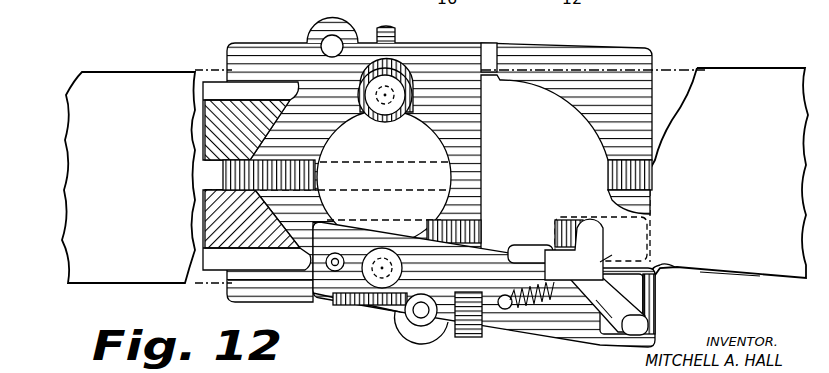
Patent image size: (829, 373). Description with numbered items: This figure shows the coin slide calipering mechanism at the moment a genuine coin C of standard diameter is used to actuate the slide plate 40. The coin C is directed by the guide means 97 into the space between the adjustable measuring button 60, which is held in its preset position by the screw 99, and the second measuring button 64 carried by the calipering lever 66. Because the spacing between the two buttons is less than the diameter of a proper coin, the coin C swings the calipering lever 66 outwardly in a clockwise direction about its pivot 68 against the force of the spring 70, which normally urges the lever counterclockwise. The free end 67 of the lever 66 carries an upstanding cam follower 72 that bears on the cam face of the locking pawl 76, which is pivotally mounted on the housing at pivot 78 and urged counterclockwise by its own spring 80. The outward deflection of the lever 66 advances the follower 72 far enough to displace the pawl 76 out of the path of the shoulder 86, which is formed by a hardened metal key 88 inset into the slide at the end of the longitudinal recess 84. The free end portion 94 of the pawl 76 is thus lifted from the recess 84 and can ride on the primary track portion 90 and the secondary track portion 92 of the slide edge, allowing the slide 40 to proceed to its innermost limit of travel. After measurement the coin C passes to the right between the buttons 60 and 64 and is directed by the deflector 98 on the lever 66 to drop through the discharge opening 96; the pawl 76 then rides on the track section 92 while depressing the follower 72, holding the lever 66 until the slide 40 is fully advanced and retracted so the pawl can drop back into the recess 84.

The slide plate 40 is at (141, 82).
The adjustable measuring button 60 is at (391, 82).
The second measuring button 64 is at (383, 288).
The calipering lever 66 is at (470, 258).
The free end 67 is at (656, 289).
The pivot 68 is at (333, 271).
The spring 70 is at (462, 344).
The cam follower 72 is at (595, 322).
The locking pawl 76 is at (603, 322).
The pivot 78 is at (655, 322).
The spring 80 is at (525, 322).
The longitudinal recess 84 is at (665, 268).
The shoulder 86 is at (600, 262).
The hardened metal key 88 is at (600, 231).
The primary track portion 90 is at (775, 282).
The secondary track portion 92 is at (572, 295).
The free end portion 94 is at (657, 304).
The discharge opening 96 is at (573, 98).
The guide means 97 is at (235, 115).
The deflector 98 is at (530, 250).
The screw 99 is at (386, 27).
The coin C is at (423, 147).